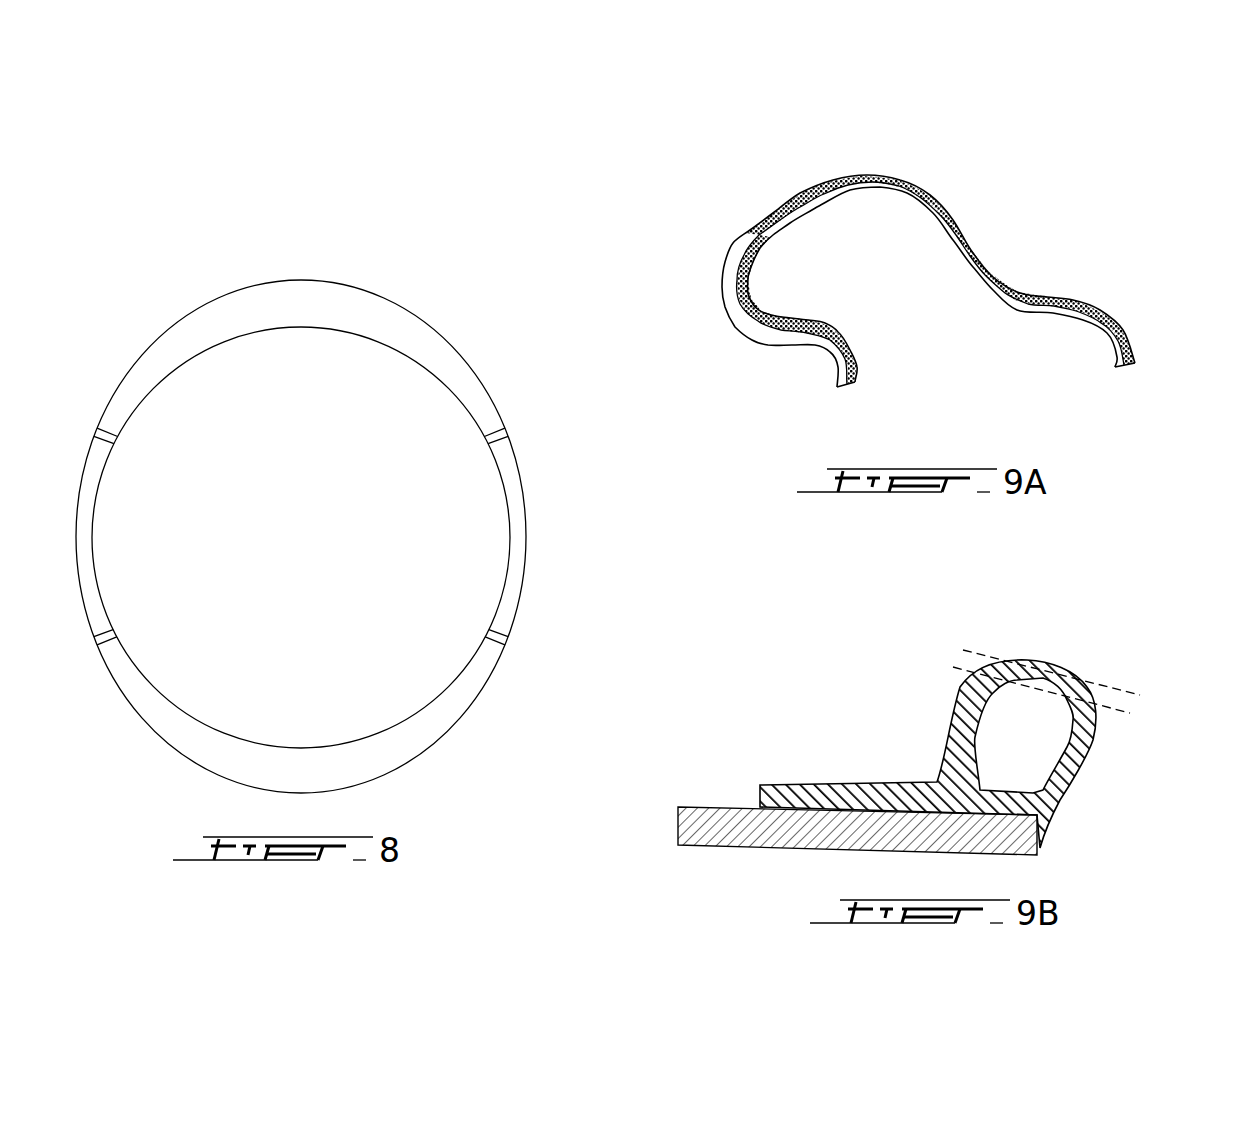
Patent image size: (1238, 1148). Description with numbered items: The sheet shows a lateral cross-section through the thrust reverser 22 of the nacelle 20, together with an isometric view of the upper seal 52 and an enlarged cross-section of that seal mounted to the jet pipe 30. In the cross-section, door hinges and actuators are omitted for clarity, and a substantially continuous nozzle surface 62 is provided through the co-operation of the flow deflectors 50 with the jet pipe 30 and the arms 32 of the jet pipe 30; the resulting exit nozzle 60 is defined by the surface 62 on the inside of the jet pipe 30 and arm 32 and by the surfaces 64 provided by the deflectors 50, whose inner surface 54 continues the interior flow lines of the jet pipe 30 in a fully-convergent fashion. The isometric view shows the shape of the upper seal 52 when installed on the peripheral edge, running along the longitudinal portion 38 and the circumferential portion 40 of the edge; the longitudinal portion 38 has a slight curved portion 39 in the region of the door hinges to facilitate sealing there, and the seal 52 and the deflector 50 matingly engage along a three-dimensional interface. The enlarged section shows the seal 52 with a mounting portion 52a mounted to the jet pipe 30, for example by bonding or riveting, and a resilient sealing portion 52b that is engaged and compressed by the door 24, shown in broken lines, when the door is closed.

In FIG. 8, the nacelle 20 is at (400, 306).
In FIG. 8, the thrust reverser 22 is at (289, 302).
In FIG. 8, the pivoting door 24 is at (388, 748).
In FIG. 9B, the pivoting door 24 is at (973, 651).
In FIG. 9B, the jet pipe 30 is at (703, 807).
In FIG. 8, the arm 32 is at (88, 516).
In FIG. 9A, the longitudinal portion 38 is at (757, 307).
In FIG. 9A, the curved portion 39 is at (862, 384).
In FIG. 9A, the circumferential portion 40 is at (800, 223).
In FIG. 8, the flow deflector 50 is at (299, 330).
In FIG. 8, the seal 52 is at (116, 444).
In FIG. 9A, the seal 52 is at (948, 178).
In FIG. 9B, the seal 52 is at (1110, 657).
In FIG. 9B, the mounting portion 52a is at (820, 785).
In FIG. 9B, the resilient sealing portion 52b is at (1090, 763).
In FIG. 8, the inner surface 54 is at (302, 410).
In FIG. 8, the exit nozzle 60 is at (308, 489).
In FIG. 8, the nozzle surface 62 is at (300, 748).
In FIG. 8, the deflector surface 64 is at (336, 410).